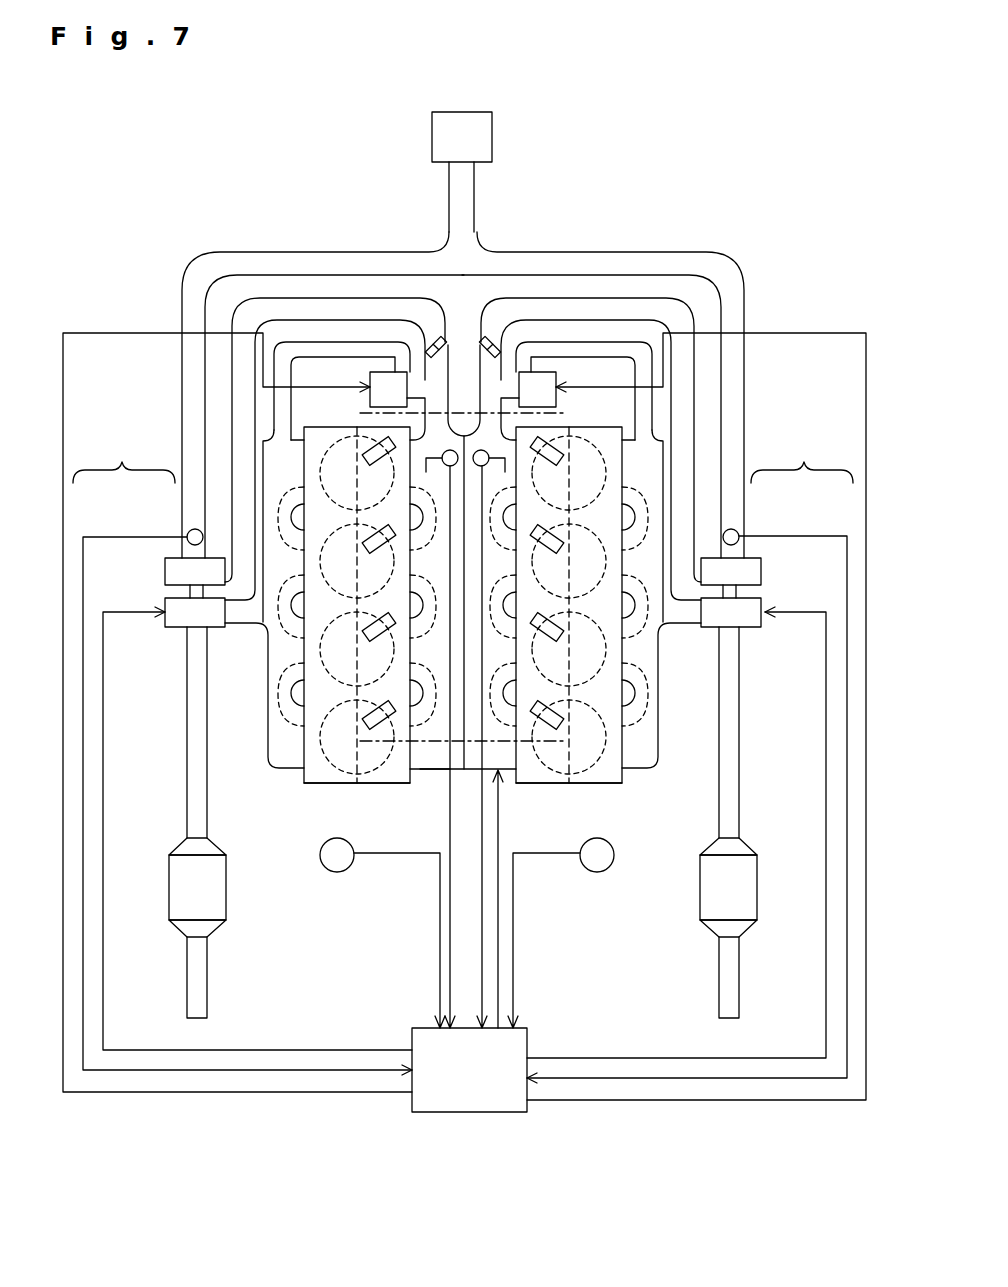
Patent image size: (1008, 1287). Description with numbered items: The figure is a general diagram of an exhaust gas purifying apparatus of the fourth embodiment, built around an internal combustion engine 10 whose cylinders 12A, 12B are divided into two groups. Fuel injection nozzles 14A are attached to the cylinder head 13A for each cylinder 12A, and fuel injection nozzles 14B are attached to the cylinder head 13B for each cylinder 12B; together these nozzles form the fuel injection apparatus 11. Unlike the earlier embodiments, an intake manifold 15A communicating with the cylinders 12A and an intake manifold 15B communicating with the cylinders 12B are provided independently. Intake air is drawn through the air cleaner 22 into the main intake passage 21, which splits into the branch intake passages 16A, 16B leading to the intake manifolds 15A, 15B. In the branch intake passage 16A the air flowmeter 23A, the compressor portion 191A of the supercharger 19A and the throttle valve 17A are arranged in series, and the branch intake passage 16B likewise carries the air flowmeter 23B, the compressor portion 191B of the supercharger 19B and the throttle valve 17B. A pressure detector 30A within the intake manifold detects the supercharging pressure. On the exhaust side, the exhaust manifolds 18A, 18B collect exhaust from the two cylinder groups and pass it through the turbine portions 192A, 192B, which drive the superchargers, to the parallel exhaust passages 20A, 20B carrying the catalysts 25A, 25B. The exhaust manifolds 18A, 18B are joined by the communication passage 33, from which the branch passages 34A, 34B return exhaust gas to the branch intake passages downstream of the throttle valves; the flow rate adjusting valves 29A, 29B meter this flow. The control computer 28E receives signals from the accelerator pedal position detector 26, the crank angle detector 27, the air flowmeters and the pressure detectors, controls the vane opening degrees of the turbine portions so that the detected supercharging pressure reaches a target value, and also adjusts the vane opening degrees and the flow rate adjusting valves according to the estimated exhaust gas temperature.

The internal combustion engine 10 is at (198, 195).
The fuel injection apparatus 11 is at (463, 633).
The cylinders 12A is at (300, 800).
The cylinders 12B is at (575, 627).
The cylinder head 13A is at (366, 786).
The cylinder head 13B is at (569, 810).
The fuel injection nozzles 14A is at (372, 542).
The fuel injection nozzles 14B is at (622, 587).
The intake manifold 15A is at (441, 748).
The intake manifold 15B is at (512, 750).
The branch intake passage 16A is at (320, 308).
The branch intake passage 16B is at (603, 383).
The throttle valve 17A is at (433, 337).
The throttle valve 17B is at (589, 404).
The exhaust manifold 18A is at (270, 748).
The exhaust manifold 18B is at (667, 695).
The supercharger 19A is at (149, 528).
The supercharger 19B is at (781, 528).
The compressor portion 191A is at (175, 565).
The turbine portion 192A is at (167, 607).
The compressor portion 191B is at (750, 537).
The turbine portion 192B is at (781, 558).
The exhaust passage 20A is at (208, 790).
The exhaust passage 20B is at (699, 732).
The main intake passage 21 is at (476, 183).
The air cleaner 22 is at (492, 130).
The air flowmeter 23A is at (195, 528).
The air flowmeter 23B is at (758, 467).
The catalyst 25A is at (170, 888).
The catalyst 25B is at (761, 928).
The accelerator pedal position detector 26 is at (345, 868).
The crank angle detector 27 is at (590, 868).
The control computer 28E is at (470, 1112).
The flow rate adjusting valve 29A is at (393, 383).
The flow rate adjusting valve 29B is at (584, 324).
The pressure detector 30A is at (465, 739).
The communication passage 33 is at (466, 345).
The branch passage 34A is at (387, 362).
The branch passage 34B is at (565, 384).